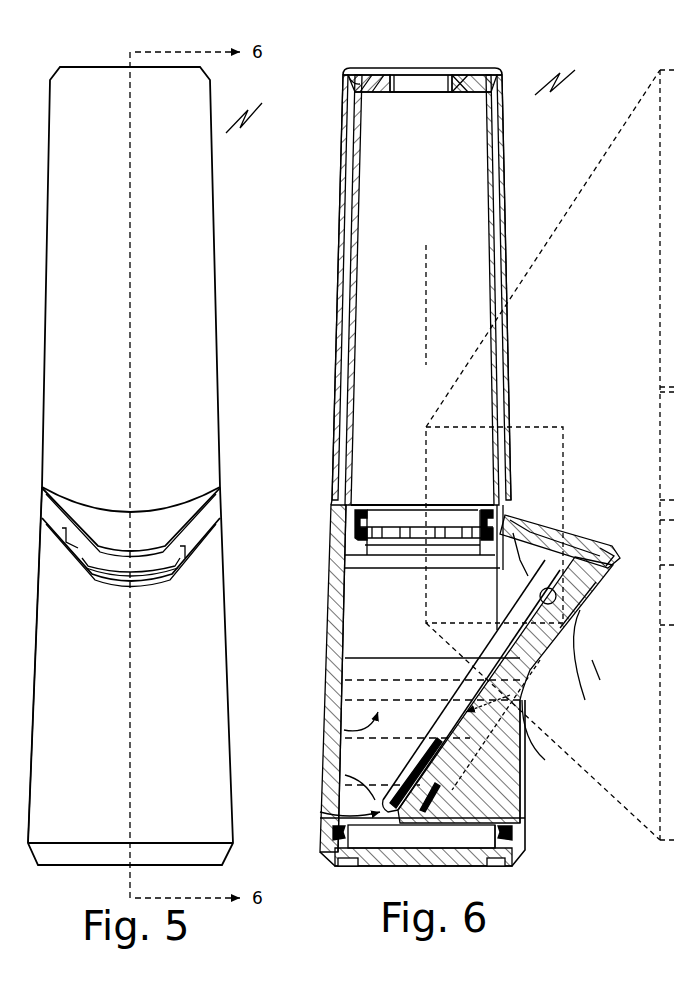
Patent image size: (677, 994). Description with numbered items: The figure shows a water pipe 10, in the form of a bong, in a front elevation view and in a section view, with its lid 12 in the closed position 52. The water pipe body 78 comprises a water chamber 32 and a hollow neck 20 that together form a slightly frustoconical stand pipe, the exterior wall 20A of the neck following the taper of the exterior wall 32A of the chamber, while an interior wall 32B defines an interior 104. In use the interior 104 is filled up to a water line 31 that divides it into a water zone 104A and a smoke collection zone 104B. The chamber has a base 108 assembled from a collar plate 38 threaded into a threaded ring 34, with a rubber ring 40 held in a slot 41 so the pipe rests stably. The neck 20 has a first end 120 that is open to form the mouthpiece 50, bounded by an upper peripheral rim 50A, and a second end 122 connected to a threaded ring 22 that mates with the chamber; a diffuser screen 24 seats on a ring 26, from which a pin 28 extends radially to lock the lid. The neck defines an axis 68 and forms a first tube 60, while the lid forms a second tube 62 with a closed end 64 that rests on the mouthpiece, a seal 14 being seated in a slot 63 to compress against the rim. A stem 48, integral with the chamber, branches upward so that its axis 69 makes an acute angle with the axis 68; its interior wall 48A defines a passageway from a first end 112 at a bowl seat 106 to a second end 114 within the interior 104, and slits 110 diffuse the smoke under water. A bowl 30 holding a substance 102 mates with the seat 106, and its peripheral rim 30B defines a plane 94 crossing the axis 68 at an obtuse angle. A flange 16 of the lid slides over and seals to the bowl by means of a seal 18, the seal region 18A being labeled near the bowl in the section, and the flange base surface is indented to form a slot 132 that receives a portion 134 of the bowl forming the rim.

In FIG. 5, the water pipe 10 is at (260, 113).
In FIG. 6, the water pipe 10 is at (568, 75).
In FIG. 5, the lid 12 is at (213, 205).
In FIG. 6, the lid 12 is at (340, 148).
In FIG. 6, the seal 14 is at (378, 95).
In FIG. 5, the flange 16 is at (157, 525).
In FIG. 6, the flange 16 is at (585, 542).
In FIG. 6, the seal 18 is at (604, 580).
In FIG. 6, the nozzle inner surface 18A is at (575, 622).
In FIG. 6, the hollow neck 20 is at (487, 145).
In FIG. 6, the exterior wall 20A is at (348, 315).
In FIG. 6, the threaded ring 22 is at (470, 505).
In FIG. 6, the diffuser screen 24 is at (392, 545).
In FIG. 6, the ring 26 is at (352, 535).
In FIG. 6, the pin 28 is at (530, 528).
In FIG. 5, the bowl 30 is at (148, 572).
In FIG. 6, the bowl 30 is at (580, 600).
In FIG. 6, the peripheral rim 30B is at (612, 556).
In FIG. 6, the water line 31 is at (335, 640).
In FIG. 5, the water chamber 32 is at (224, 658).
In FIG. 6, the water chamber 32 is at (330, 600).
In FIG. 6, the exterior wall 32A is at (590, 805).
In FIG. 6, the interior wall 32B is at (340, 570).
In FIG. 6, the threaded ring 34 is at (516, 838).
In FIG. 6, the collar plate 38 is at (328, 860).
In FIG. 6, the rubber ring 40 is at (480, 862).
In FIG. 6, the slot 41 is at (500, 856).
In FIG. 6, the stem 48 is at (575, 660).
In FIG. 6, the interior wall 48A is at (462, 708).
In FIG. 6, the mouthpiece 50 is at (482, 80).
In FIG. 6, the upper peripheral rim 50A is at (470, 78).
In FIG. 5, the closed position 52 is at (236, 500).
In FIG. 6, the first tube 60 is at (452, 243).
In FIG. 6, the second tube 62 is at (506, 150).
In FIG. 6, the slot 63 is at (344, 80).
In FIG. 6, the closed end 64 is at (425, 88).
In FIG. 6, the axis 68 is at (428, 320).
In FIG. 6, the axis 69 is at (522, 712).
In FIG. 6, the water pipe body 78 is at (340, 690).
In FIG. 6, the plane 94 is at (548, 490).
In FIG. 6, the substance 102 is at (570, 522).
In FIG. 6, the interior 104 is at (324, 727).
In FIG. 6, the water zone 104A is at (345, 775).
In FIG. 6, the smoke collection zone 104B is at (422, 510).
In FIG. 6, the bowl seat 106 is at (536, 590).
In FIG. 6, the base 108 is at (480, 868).
In FIG. 6, the slits 110 is at (412, 788).
In FIG. 6, the first end 112 is at (611, 685).
In FIG. 6, the second end 114 is at (327, 795).
In FIG. 6, the first end 120 is at (376, 72).
In FIG. 6, the second end 122 is at (415, 542).
In FIG. 5, the slot 132 is at (55, 545).
In FIG. 5, the portion 134 is at (103, 578).